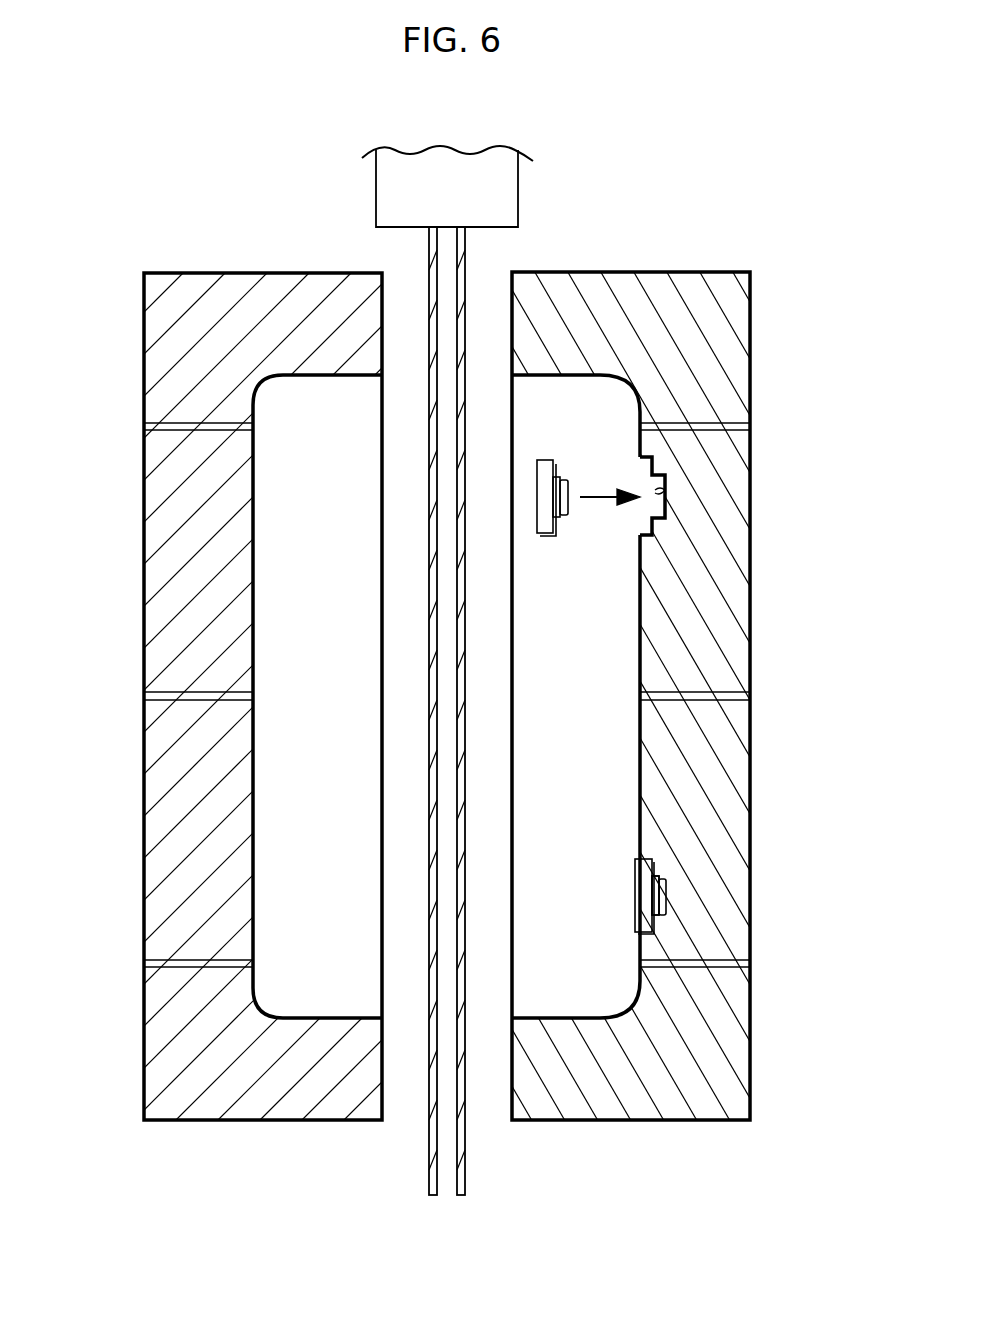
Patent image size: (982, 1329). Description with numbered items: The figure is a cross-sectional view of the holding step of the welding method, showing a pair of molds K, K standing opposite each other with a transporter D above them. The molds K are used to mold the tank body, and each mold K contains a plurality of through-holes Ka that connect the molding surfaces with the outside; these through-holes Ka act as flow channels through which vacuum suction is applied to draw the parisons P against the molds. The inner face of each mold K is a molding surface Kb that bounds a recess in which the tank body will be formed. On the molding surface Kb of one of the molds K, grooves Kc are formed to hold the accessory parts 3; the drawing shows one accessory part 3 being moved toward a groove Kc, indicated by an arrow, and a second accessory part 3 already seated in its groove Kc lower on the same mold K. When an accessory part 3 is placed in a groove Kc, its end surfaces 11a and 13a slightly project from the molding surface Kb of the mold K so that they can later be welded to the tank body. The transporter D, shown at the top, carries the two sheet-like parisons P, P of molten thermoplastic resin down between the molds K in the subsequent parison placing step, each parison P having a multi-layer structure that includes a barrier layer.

The mold K is at (144, 330).
The through-hole Ka is at (195, 423).
The molding surface Kb is at (258, 618).
The groove Kc is at (660, 490).
The accessory part 3 is at (545, 533).
The end surface 11a is at (635, 866).
The end surface 13a is at (655, 895).
The transporter D is at (518, 185).
The parison P is at (429, 1160).